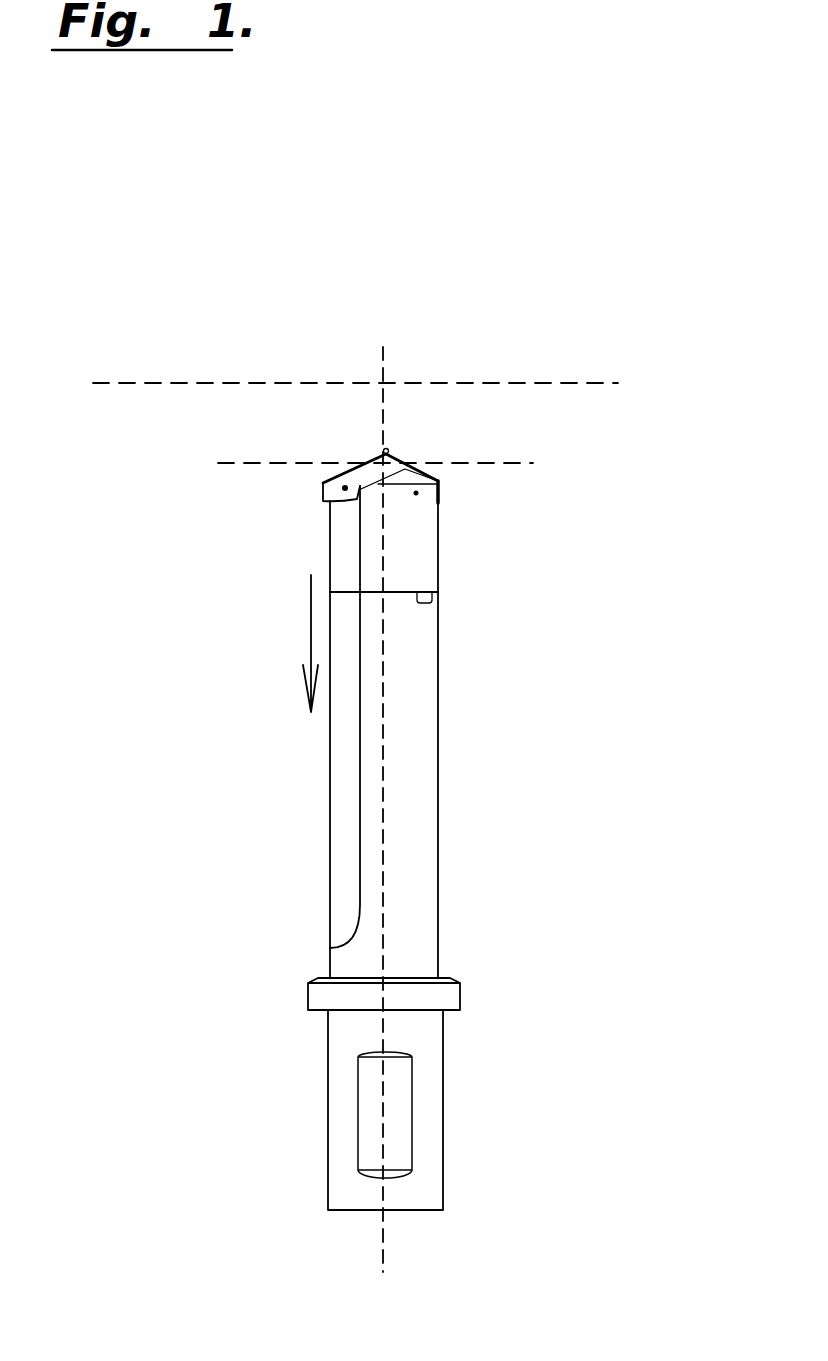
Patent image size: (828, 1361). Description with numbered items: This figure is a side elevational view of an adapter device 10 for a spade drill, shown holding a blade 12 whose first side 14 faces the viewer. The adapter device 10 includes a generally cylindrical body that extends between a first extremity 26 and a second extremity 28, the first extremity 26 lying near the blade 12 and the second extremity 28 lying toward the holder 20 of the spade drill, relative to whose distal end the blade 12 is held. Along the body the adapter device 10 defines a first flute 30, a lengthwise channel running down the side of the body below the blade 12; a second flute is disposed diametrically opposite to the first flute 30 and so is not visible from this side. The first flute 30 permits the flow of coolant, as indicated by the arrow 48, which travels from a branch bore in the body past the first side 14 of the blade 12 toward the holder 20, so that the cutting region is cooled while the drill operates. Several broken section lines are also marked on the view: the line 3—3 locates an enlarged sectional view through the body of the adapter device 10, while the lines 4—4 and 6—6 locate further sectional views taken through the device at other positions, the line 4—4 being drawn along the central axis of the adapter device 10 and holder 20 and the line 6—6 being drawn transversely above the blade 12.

The adapter device 10 is at (475, 577).
The blade 12 is at (440, 443).
The first side 14 is at (362, 482).
The holder 20 is at (413, 764).
The first extremity 26 is at (393, 487).
The second extremity 28 is at (378, 592).
The first flute 30 is at (343, 542).
The arrow 48 is at (308, 632).
The section line 3— 3 is at (222, 463).
The section line 4— 4 is at (383, 347).
The section line 6— 6 is at (93, 383).